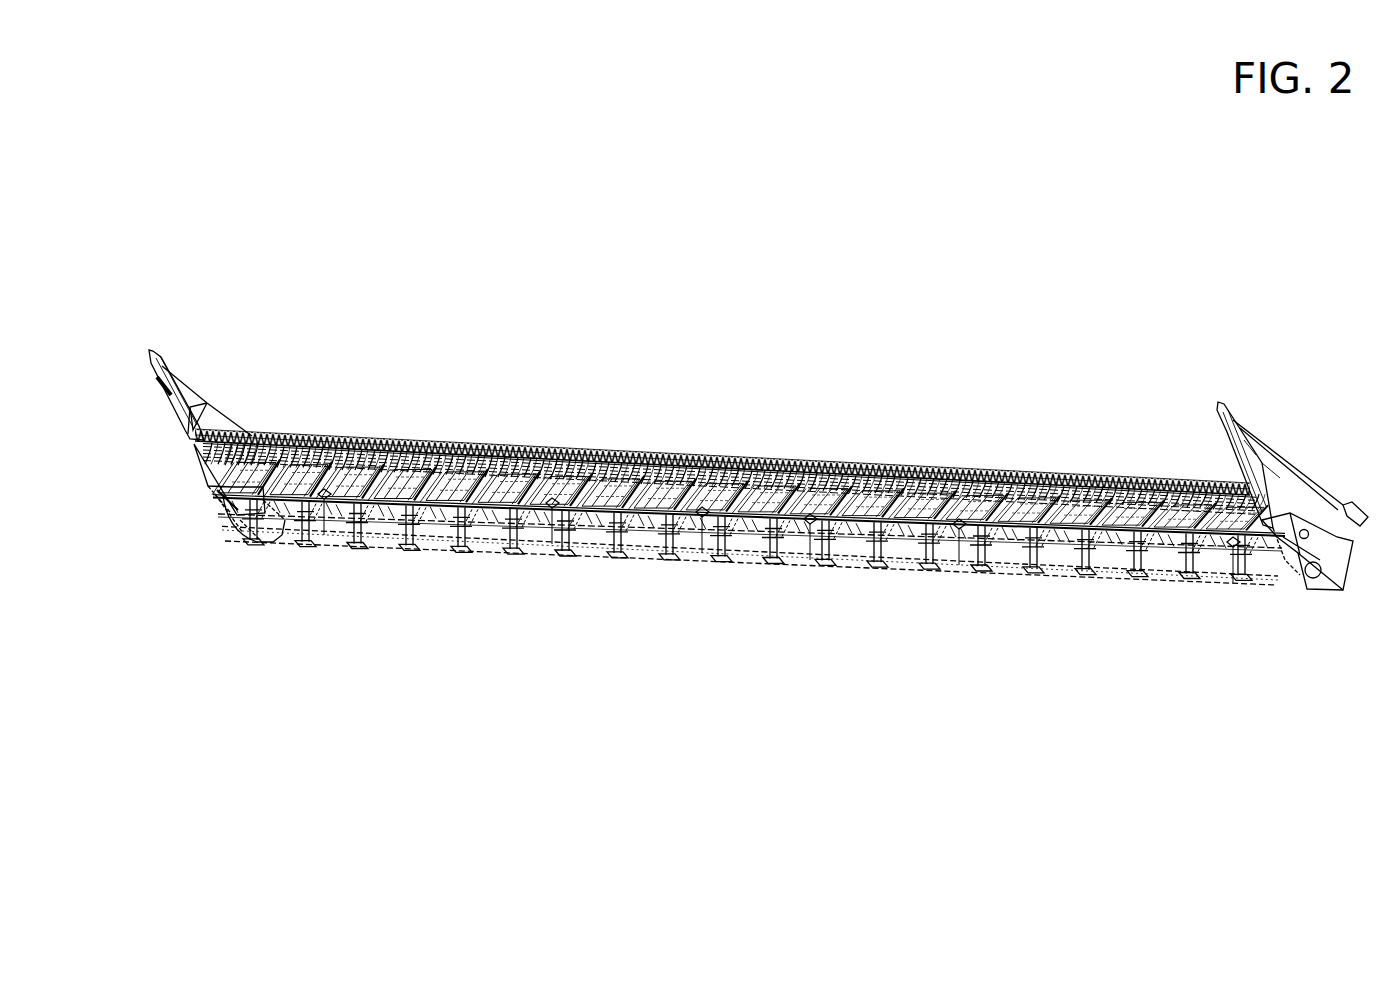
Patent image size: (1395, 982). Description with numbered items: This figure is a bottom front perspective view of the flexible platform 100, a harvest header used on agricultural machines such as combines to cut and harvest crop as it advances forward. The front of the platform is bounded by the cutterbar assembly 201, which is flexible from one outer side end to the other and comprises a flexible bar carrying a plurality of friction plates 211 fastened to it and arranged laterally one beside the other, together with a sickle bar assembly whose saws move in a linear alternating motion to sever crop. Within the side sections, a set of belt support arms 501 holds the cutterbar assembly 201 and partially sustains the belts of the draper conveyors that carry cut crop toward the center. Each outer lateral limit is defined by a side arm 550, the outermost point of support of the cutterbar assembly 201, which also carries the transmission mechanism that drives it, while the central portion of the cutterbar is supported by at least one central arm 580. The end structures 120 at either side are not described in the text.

The flexible platform 100 is at (753, 357).
The crop divider 120 is at (188, 402).
The cutterbar assembly 201 is at (394, 432).
The friction plates 211 is at (462, 470).
The belt support arms 501 is at (323, 493).
The side arm 550 is at (217, 489).
The central arm 580 is at (702, 511).